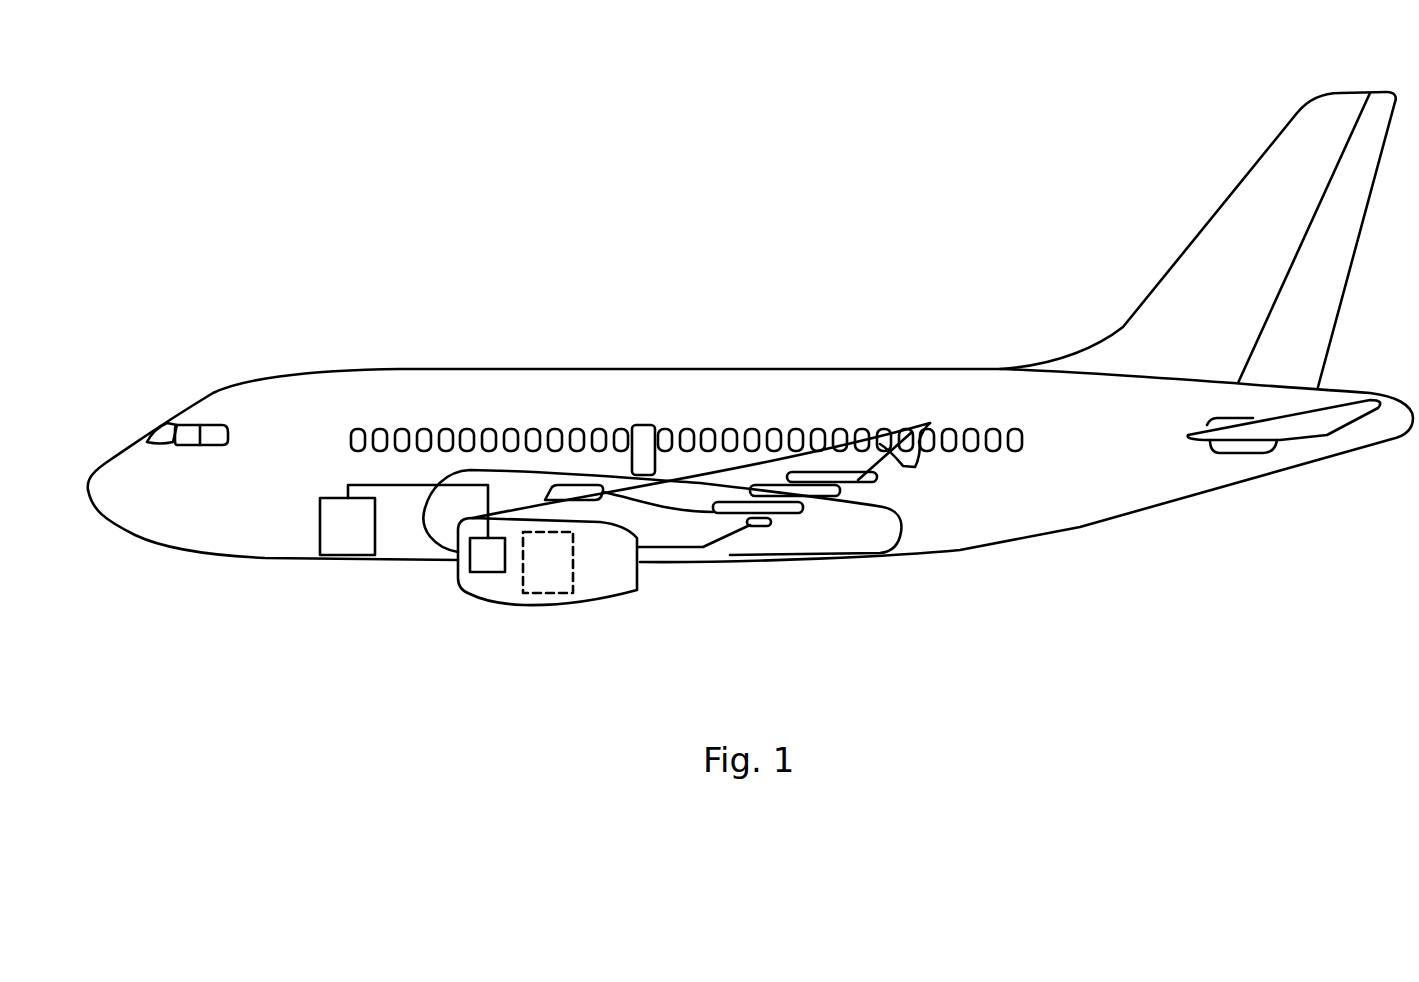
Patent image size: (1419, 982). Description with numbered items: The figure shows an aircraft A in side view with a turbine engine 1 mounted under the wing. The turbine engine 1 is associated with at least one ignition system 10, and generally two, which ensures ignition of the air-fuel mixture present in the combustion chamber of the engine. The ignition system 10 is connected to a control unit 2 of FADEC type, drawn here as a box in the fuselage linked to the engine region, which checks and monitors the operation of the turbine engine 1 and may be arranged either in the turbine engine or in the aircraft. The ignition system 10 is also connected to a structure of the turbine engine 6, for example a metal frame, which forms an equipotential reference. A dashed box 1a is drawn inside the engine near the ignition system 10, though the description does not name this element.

The aircraft A is at (832, 268).
The turbine engine 1 is at (553, 646).
The engine control unit 1a is at (555, 593).
The control unit 2 is at (338, 555).
The structure of the turbine engine 6 is at (618, 570).
The ignition system 10 is at (483, 573).